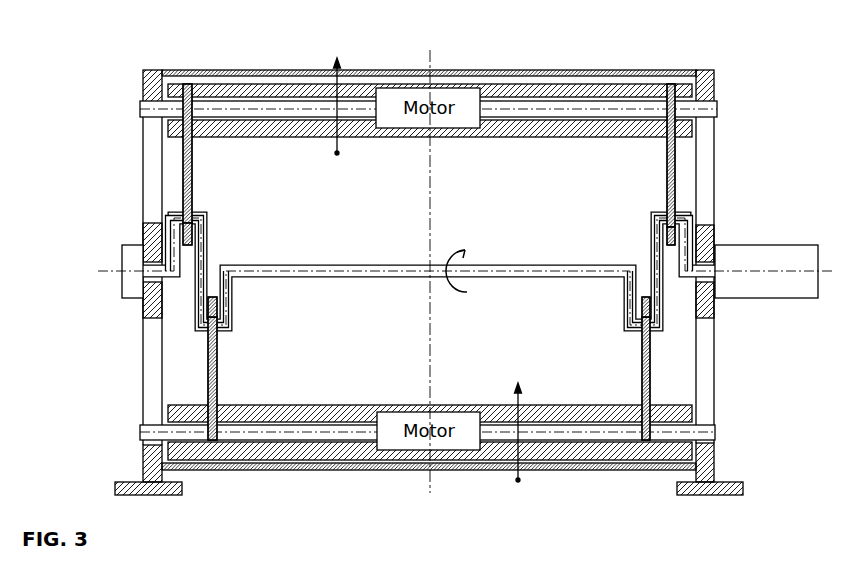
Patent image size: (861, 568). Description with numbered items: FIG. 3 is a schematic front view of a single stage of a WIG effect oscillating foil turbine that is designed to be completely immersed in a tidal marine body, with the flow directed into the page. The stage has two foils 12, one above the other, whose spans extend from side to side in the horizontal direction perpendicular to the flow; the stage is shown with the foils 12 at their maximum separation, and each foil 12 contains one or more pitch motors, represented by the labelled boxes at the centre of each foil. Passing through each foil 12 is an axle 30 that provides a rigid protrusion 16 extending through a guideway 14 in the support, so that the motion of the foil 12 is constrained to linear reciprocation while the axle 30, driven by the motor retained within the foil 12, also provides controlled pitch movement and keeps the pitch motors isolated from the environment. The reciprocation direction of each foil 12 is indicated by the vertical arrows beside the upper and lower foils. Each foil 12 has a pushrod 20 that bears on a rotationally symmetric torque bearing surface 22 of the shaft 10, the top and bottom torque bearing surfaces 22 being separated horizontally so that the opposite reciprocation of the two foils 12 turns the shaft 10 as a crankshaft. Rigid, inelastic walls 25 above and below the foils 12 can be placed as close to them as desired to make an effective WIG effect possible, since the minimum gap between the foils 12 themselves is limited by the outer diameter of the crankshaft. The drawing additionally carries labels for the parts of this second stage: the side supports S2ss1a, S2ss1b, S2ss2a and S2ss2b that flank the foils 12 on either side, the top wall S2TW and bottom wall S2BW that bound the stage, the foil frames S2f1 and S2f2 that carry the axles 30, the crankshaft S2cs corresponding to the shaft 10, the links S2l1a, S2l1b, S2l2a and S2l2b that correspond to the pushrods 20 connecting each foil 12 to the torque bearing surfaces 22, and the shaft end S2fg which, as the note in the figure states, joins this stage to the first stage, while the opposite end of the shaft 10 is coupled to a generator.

The shaft 10 is at (513, 274).
The foil 12 is at (311, 126).
The guideway 14 is at (143, 200).
The rigid protrusion 16 is at (147, 108).
The pushrod 20 is at (190, 160).
The torque bearing surfaces 22 is at (204, 214).
The walls 25 is at (312, 72).
The axle 30 is at (626, 106).
The second stage side support 1a S2ss1a is at (148, 192).
The second stage side support 1b S2ss1b is at (780, 153).
The second stage side support 2a S2ss2a is at (150, 385).
The second stage side support 2b S2ss2b is at (787, 363).
The second stage top wall S2TW is at (468, 72).
The second stage bottom wall S2BW is at (320, 470).
The second stage frame 1 S2f1 is at (481, 136).
The second stage frame 2 S2f2 is at (266, 405).
The second stage crankshaft S2cs is at (369, 253).
The second stage shaft to join with first stage S2fg is at (65, 279).
The second stage link 1a S2l1a is at (191, 170).
The second stage link 1b S2l1b is at (667, 183).
The second stage link 2a S2l2a is at (215, 378).
The second stage link 2b S2l2b is at (642, 382).